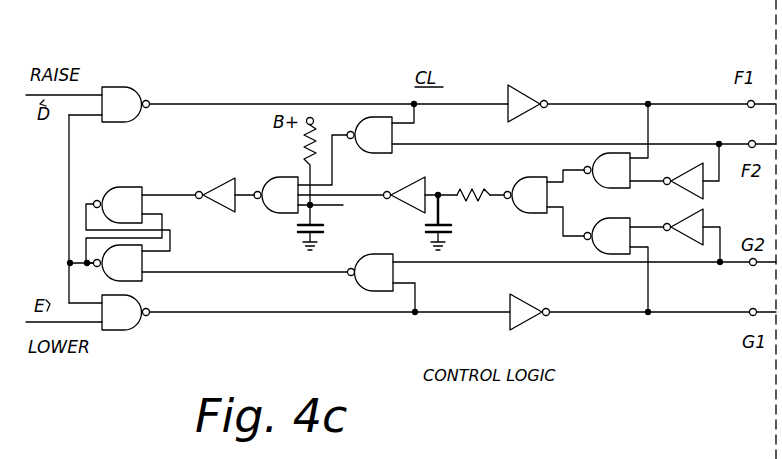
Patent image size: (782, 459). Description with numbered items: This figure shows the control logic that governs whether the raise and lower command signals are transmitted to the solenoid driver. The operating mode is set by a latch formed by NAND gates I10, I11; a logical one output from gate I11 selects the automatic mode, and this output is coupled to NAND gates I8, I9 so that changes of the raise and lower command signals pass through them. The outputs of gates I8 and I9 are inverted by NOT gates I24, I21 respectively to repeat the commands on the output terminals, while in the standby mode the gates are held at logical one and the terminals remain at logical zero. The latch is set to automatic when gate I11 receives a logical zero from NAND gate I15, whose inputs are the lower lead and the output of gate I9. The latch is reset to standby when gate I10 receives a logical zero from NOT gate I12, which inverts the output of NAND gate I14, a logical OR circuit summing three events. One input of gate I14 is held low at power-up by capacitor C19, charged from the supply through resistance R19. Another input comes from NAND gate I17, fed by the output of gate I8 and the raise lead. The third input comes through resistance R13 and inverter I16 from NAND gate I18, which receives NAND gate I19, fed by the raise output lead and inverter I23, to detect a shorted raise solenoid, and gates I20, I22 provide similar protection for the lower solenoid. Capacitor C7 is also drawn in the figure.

The NAND gate I8 is at (117, 124).
The NAND gate I9 is at (128, 331).
The NAND gate I10 is at (126, 187).
The NAND gate I11 is at (134, 281).
The NOT gate I12 is at (225, 180).
The NAND gate I14 is at (272, 213).
The NAND gate I15 is at (360, 285).
The inverter I16 is at (410, 204).
The NAND gate I17 is at (368, 153).
The NAND gate I18 is at (525, 213).
The NAND gate I19 is at (603, 188).
The logic gate I20 is at (605, 254).
The NOT gate I21 is at (520, 322).
The logic gate I22 is at (683, 221).
The inverter I23 is at (700, 193).
The NOT gate I24 is at (523, 89).
The resistance R13 is at (475, 188).
The resistance R19 is at (304, 143).
The capacitor C7 is at (451, 237).
The capacitor C19 is at (323, 236).